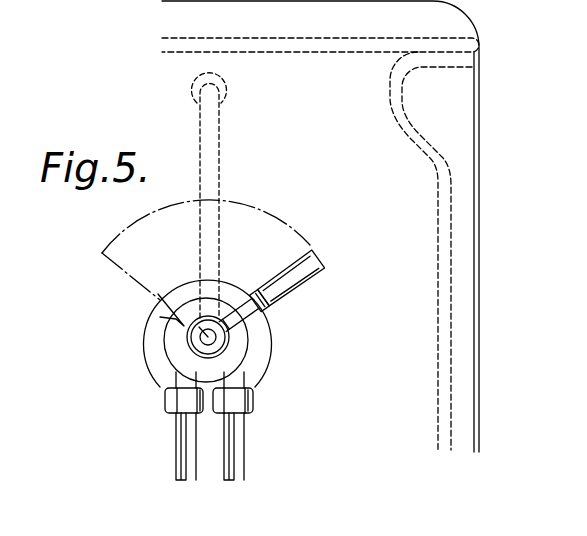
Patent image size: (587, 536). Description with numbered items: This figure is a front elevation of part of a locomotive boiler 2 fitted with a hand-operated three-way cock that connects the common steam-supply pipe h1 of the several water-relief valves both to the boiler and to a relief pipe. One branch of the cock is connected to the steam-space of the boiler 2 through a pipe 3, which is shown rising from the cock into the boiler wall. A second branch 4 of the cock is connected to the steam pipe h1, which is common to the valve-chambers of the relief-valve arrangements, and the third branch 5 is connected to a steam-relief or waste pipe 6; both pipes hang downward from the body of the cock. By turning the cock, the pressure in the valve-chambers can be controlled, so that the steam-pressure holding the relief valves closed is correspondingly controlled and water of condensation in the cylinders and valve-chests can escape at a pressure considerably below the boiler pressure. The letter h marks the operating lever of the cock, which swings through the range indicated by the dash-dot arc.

The boiler 2 is at (320, 226).
The pipe 3 is at (216, 195).
The branch 4 is at (178, 375).
The branch 5 is at (238, 372).
The steam-relief or waste pipe 6 is at (242, 445).
The pawl h is at (160, 316).
The common steam-supply pipe h1 is at (185, 435).